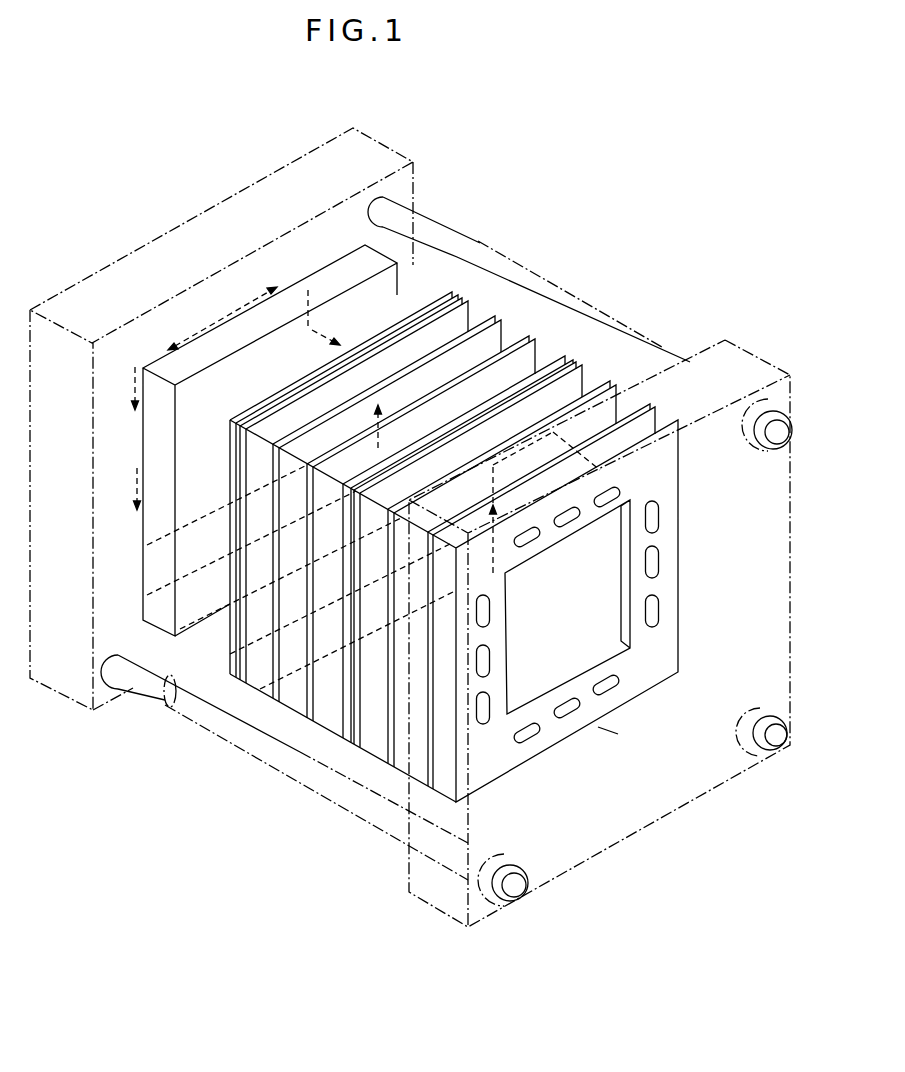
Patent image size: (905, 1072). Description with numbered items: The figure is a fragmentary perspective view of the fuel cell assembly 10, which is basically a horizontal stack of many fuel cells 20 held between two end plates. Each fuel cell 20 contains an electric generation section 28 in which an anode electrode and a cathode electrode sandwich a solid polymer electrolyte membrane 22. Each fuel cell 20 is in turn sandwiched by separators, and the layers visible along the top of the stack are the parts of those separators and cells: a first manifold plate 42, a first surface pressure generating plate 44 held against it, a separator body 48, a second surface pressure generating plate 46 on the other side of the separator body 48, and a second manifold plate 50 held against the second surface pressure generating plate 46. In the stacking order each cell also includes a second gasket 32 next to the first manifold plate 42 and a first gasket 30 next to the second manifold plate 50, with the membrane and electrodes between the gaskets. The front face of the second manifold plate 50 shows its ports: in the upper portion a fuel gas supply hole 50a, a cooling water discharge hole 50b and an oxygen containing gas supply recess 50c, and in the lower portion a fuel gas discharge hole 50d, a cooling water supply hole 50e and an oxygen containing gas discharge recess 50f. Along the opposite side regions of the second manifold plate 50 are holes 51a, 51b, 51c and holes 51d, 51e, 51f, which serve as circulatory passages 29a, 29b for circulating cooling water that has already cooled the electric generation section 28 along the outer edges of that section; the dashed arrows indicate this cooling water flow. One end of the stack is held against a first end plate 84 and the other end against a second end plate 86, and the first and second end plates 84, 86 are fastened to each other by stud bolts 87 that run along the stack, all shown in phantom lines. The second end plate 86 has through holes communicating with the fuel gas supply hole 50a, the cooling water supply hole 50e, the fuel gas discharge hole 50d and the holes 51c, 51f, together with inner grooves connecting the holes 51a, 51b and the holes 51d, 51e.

The fuel cell stack 10 is at (658, 173).
The fuel cell 20 is at (432, 312).
The solid polymer electrolyte membrane 22 is at (350, 734).
The electric generation section 28 is at (340, 728).
The first gasket 30 is at (343, 731).
The second gasket 32 is at (356, 738).
The first manifold plate 42 is at (474, 314).
The first surface pressure generating plate 44 is at (513, 337).
The second surface pressure generating plate 46 is at (531, 340).
The separator body 48 is at (496, 320).
The second manifold plate 50 is at (546, 356).
The fuel gas supply hole 50a is at (607, 506).
The cooling water discharge hole 50b is at (565, 527).
The oxygen containing gas supply recess 50c is at (530, 548).
The fuel gas discharge hole 50d is at (527, 743).
The cooling water supply hole 50e is at (566, 718).
The oxygen containing gas discharge recess 50f is at (630, 690).
The hole 51a is at (658, 508).
The hole 51b is at (658, 552).
The hole 51c is at (658, 598).
The hole 51d is at (543, 637).
The hole 51e is at (542, 666).
The hole 51f is at (539, 690).
The circulatory passage 29a is at (653, 491).
The circulatory passage 29b is at (178, 443).
The first end plate 84 is at (213, 213).
The second end plate 86 is at (620, 836).
The stud bolt 87 is at (662, 352).